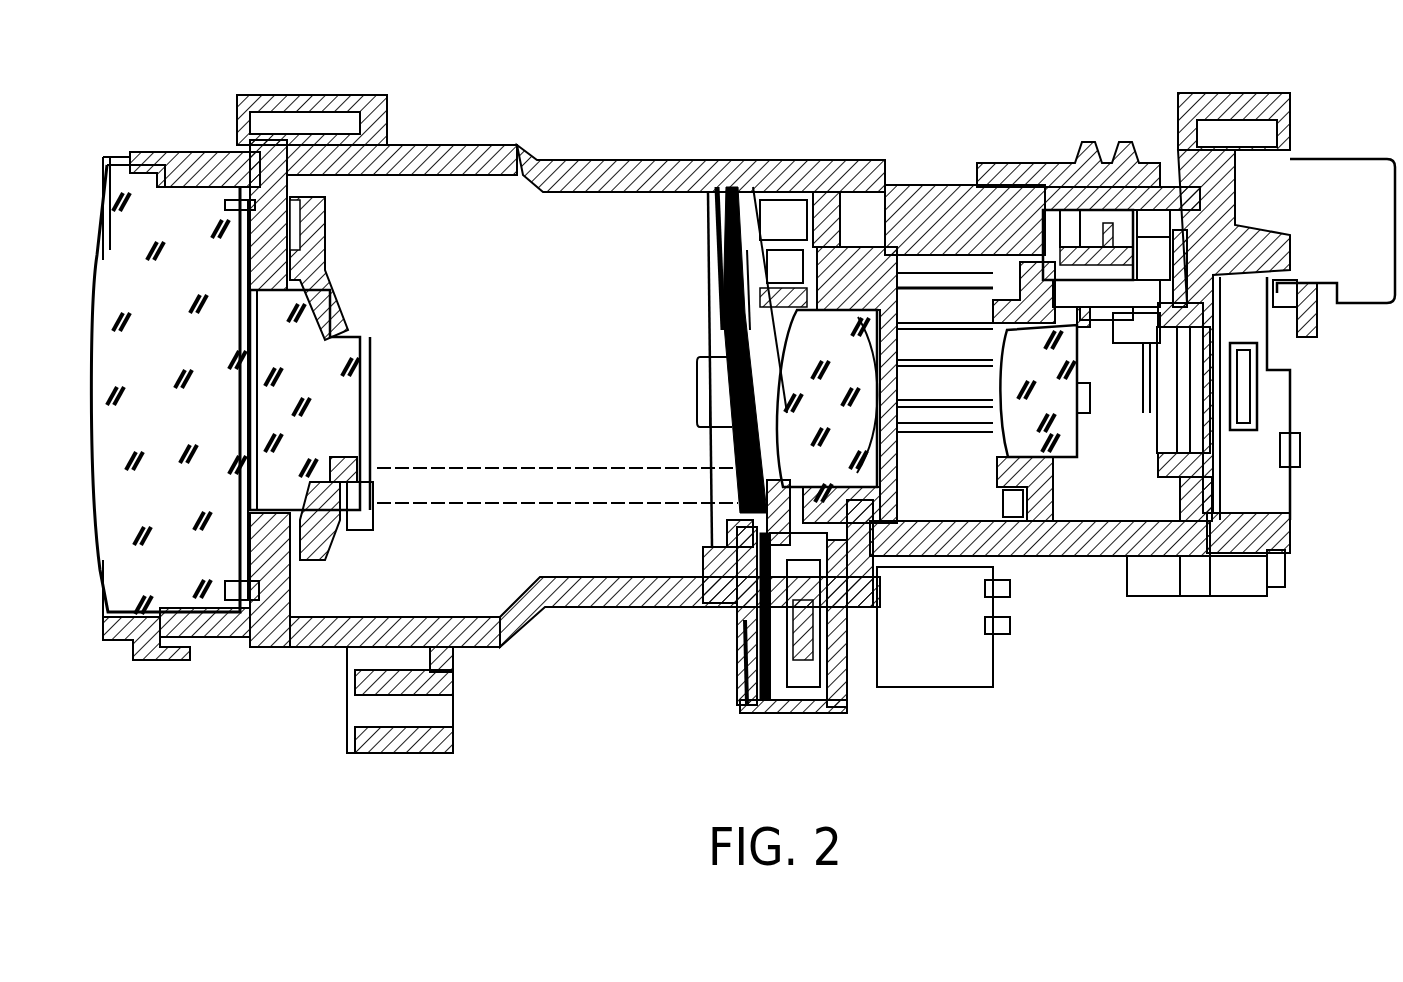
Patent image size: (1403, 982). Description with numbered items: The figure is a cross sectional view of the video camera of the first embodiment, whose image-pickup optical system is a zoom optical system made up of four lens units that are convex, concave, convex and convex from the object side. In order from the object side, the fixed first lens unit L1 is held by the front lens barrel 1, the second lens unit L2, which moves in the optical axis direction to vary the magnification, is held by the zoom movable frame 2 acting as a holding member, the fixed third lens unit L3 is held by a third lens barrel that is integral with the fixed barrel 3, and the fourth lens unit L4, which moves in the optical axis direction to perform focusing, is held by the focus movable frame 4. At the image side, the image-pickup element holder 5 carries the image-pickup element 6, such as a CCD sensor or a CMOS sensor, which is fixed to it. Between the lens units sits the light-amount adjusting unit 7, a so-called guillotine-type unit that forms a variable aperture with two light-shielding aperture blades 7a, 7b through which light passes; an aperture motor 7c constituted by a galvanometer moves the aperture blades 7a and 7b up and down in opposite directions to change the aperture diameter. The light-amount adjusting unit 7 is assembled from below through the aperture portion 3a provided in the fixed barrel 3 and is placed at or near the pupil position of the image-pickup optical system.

The front lens barrel 1 is at (198, 153).
The zoom movable frame 2 is at (335, 245).
The fixed barrel 3 is at (618, 158).
The aperture portion 3a is at (730, 610).
The focus movable frame 4 is at (1048, 556).
The image-pickup element holder 5 is at (1290, 590).
The image-pickup element 6 is at (1290, 403).
The light-amount adjusting unit 7 is at (800, 713).
The aperture blade 7a is at (752, 163).
The aperture blade 7b is at (745, 712).
The aperture motor 7c is at (915, 680).
The first lens unit L1 is at (130, 155).
The second lens unit L2 is at (353, 333).
The third lens unit L3 is at (812, 160).
The fourth lens unit L4 is at (972, 232).